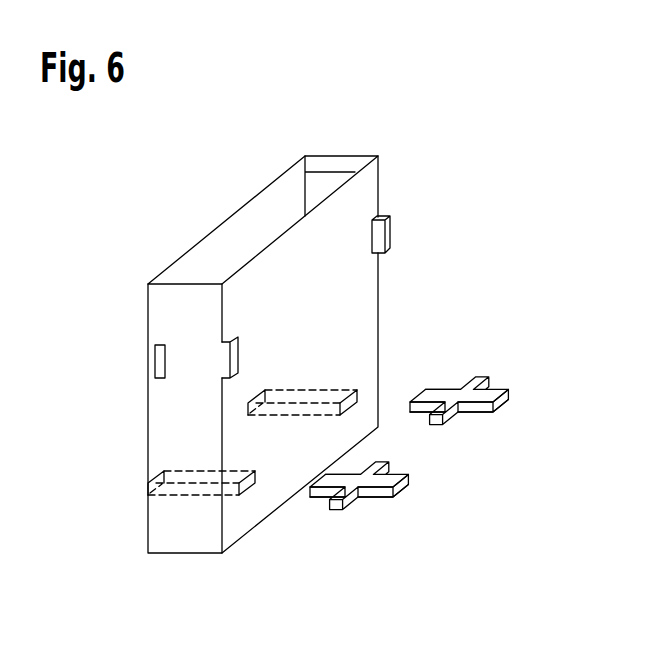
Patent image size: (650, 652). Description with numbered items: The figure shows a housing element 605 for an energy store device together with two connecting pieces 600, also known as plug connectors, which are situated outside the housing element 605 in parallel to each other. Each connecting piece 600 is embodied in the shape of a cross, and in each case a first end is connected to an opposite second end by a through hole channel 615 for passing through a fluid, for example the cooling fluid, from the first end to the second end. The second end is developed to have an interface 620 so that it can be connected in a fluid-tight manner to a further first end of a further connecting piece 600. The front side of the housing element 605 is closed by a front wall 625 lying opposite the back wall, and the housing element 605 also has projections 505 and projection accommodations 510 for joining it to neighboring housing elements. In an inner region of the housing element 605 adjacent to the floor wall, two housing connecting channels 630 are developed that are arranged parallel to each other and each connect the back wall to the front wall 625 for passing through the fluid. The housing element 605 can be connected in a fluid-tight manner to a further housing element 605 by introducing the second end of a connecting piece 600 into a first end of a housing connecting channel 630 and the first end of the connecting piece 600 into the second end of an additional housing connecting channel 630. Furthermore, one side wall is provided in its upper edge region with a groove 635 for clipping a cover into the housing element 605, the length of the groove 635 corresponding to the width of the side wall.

The housing element 605 is at (130, 196).
The front wall 625 is at (322, 305).
The groove 635 is at (337, 171).
The projection 505 is at (386, 230).
The projection accommodation 510 is at (155, 359).
The housing connecting channel 630 is at (358, 396).
The connecting piece 600 is at (518, 406).
The through hole channel 615 is at (441, 397).
The interface 620 is at (500, 407).